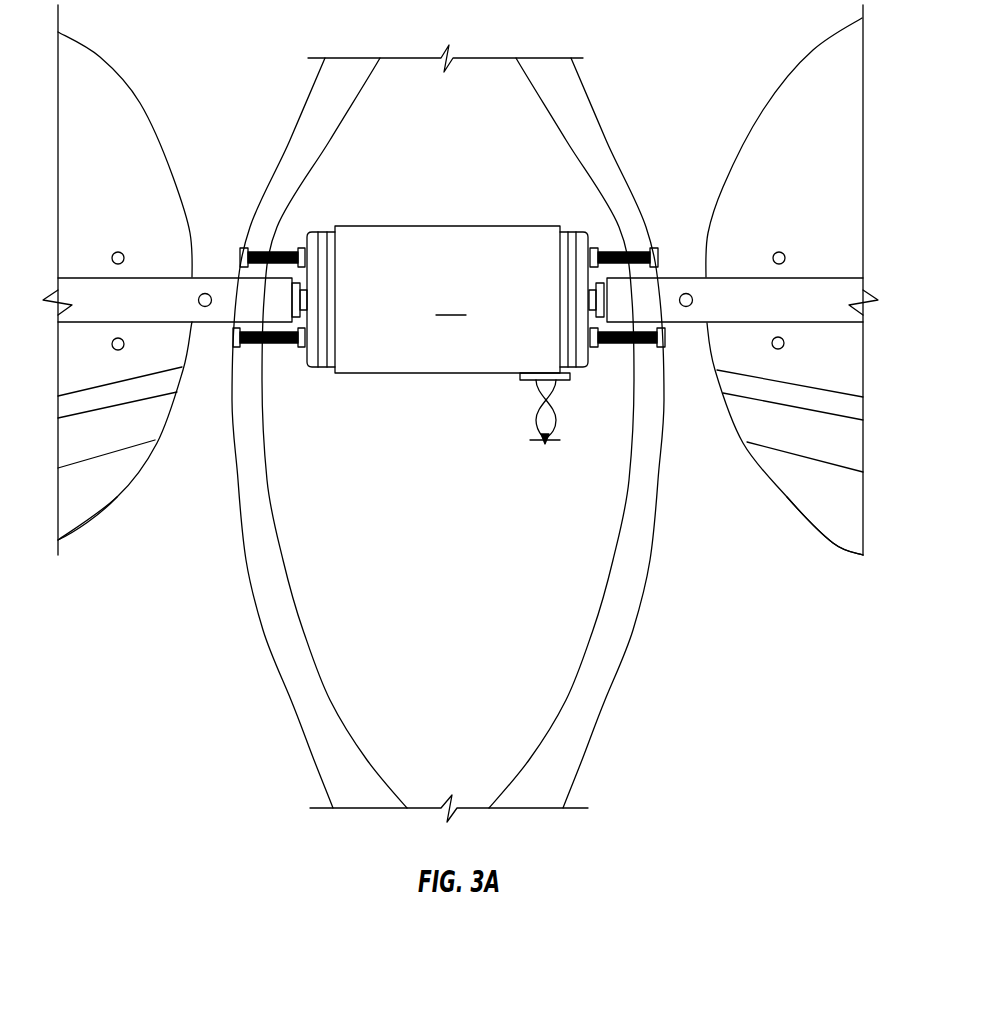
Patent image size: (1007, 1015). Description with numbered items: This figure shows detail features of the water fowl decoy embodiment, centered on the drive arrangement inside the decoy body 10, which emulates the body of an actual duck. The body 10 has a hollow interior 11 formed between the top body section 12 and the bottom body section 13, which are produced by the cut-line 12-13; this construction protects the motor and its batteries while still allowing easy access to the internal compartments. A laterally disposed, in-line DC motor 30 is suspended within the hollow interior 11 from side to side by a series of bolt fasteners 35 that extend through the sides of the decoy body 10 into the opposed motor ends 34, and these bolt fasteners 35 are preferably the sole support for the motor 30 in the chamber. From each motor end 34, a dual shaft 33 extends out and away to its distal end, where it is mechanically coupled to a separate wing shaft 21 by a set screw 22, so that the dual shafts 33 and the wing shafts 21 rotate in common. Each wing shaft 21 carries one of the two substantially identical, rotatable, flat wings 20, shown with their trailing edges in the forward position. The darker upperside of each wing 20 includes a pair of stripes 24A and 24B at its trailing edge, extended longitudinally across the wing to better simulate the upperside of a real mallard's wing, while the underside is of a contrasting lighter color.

The body 10 is at (489, 433).
The hollow interior 11 is at (376, 82).
The top body section 12 is at (520, 638).
The bottom body section 13 is at (648, 578).
The cut-line 12-13 is at (489, 433).
The rotatable wing 20 is at (460, 280).
The wing shaft 21 is at (460, 316).
The set screw 22 is at (693, 297).
The stripe 24A is at (83, 396).
The stripe 24B is at (90, 520).
The DC motor 30 is at (447, 335).
The dual shaft 33 is at (293, 265).
The motor end 34 is at (296, 358).
The bolt fastener 35 is at (240, 258).